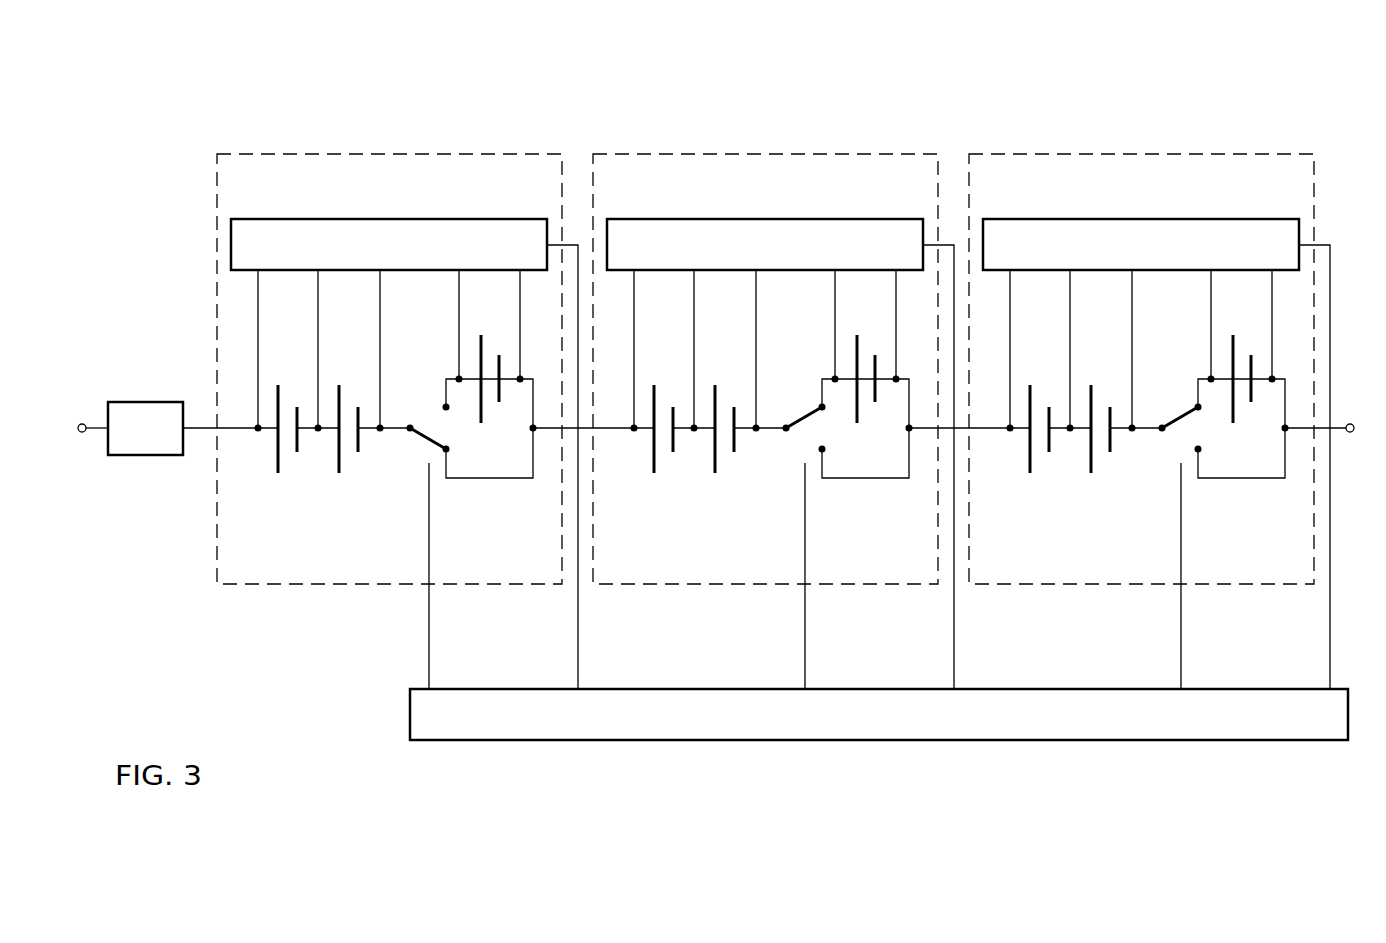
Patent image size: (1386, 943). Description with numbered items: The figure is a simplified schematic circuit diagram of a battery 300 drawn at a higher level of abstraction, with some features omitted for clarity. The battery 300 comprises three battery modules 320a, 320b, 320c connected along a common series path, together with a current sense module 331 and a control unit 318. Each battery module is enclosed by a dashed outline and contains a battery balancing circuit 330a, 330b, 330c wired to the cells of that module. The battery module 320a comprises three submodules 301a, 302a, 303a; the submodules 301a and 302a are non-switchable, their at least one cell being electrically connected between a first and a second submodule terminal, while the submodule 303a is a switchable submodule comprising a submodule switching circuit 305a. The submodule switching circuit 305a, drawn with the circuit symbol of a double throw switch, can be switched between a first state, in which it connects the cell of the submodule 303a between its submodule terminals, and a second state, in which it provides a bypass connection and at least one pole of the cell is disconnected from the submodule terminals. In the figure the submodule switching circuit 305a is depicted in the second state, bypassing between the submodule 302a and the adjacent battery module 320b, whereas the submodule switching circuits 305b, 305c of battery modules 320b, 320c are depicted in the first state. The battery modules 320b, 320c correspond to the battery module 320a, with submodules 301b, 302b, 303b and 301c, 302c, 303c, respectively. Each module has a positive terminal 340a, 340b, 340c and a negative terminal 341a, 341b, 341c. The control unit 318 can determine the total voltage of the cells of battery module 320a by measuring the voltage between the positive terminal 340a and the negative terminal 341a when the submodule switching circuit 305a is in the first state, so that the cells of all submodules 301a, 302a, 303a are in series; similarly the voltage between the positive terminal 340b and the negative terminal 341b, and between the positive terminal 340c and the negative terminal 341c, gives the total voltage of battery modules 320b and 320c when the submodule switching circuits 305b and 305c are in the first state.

The battery 300 is at (1318, 110).
The control unit 318 is at (1257, 742).
The current sense module 331 is at (153, 402).
The battery module 320a is at (389, 154).
The battery module 320b is at (765, 154).
The battery module 320c is at (1141, 154).
The battery balancing circuit 330a is at (452, 219).
The battery balancing circuit 330b is at (828, 219).
The battery balancing circuit 330c is at (1204, 219).
The positive terminal 340a is at (205, 431).
The positive terminal 340b is at (588, 430).
The positive terminal 340c is at (964, 430).
The negative terminal 341a is at (570, 431).
The negative terminal 341b is at (946, 431).
The negative terminal 341c is at (1322, 431).
The submodule 301a is at (288, 480).
The submodule 301b is at (664, 480).
The submodule 301c is at (1040, 480).
The submodule 302a is at (349, 480).
The submodule 302b is at (725, 480).
The submodule 302c is at (1101, 480).
The switchable submodule 303a is at (535, 558).
The switchable submodule 303b is at (911, 558).
The switchable submodule 303c is at (1287, 558).
The submodule switching circuit 305a is at (440, 486).
The submodule switching circuit 305b is at (816, 486).
The submodule switching circuit 305c is at (1192, 486).